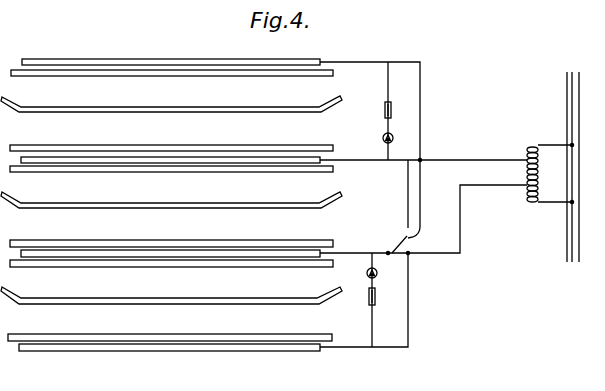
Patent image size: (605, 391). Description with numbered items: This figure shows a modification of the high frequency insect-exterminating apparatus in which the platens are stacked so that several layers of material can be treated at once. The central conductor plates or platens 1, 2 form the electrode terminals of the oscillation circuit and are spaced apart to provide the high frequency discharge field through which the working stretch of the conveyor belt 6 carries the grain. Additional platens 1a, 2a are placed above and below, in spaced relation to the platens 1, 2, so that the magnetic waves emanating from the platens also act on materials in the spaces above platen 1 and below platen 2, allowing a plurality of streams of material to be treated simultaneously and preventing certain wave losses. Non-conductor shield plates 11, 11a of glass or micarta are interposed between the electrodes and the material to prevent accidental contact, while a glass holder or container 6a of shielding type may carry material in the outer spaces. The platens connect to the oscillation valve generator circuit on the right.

The conductor plate or platen 1 is at (205, 165).
The additional platen 1a is at (100, 59).
The conductor plate or platen 2 is at (187, 262).
The additional platen 2a is at (206, 350).
The conveyor belt 6 is at (167, 195).
The holder or container 6a is at (156, 115).
The non-conductor shield plate 11 is at (238, 146).
The non-conductor shield plate 11a is at (94, 78).